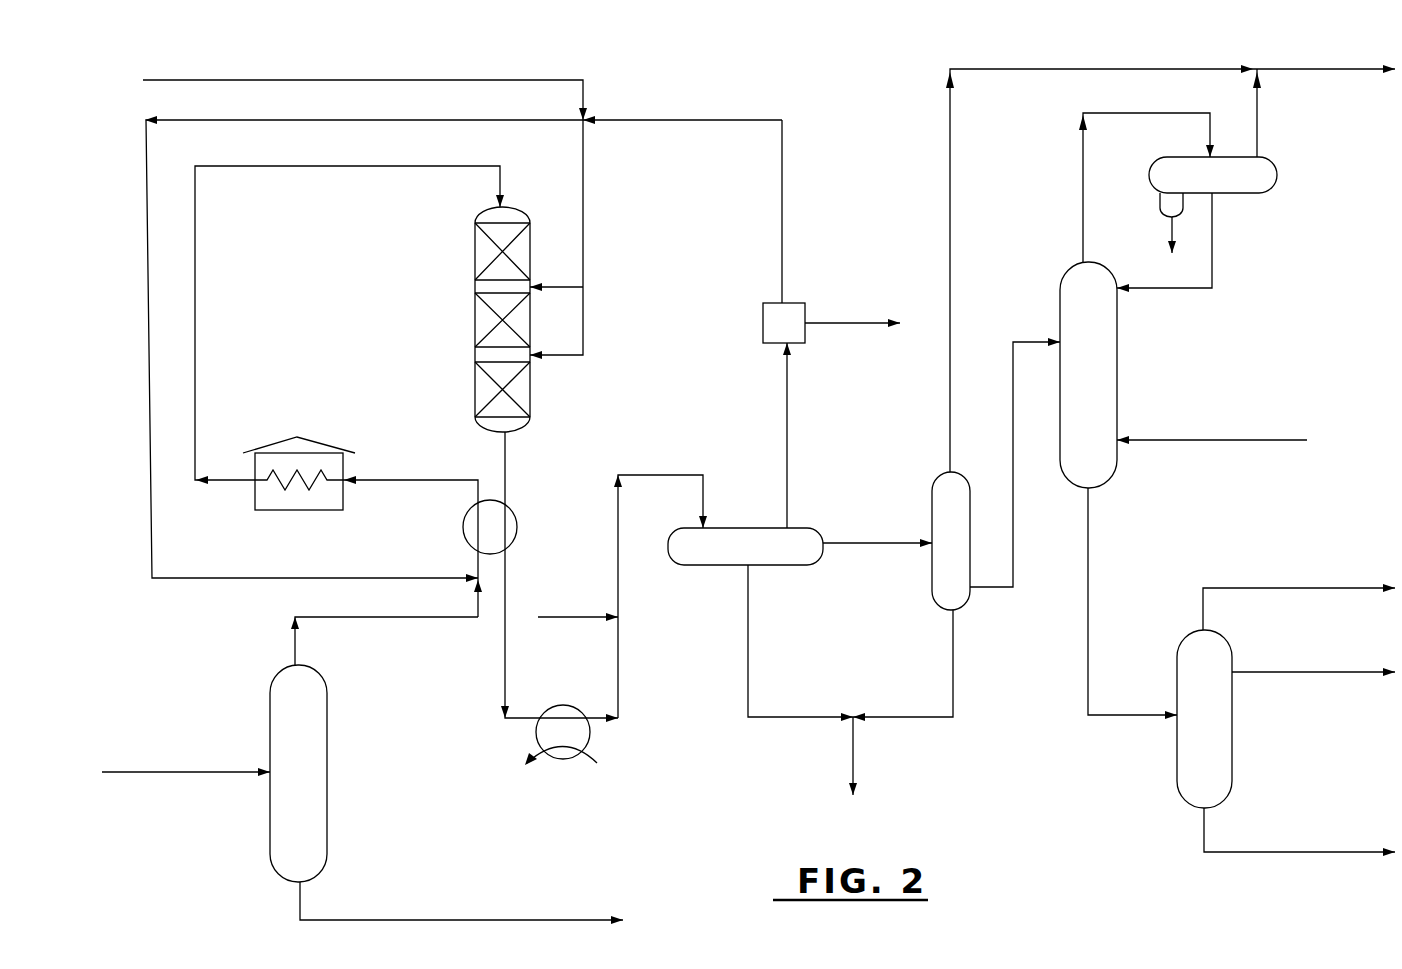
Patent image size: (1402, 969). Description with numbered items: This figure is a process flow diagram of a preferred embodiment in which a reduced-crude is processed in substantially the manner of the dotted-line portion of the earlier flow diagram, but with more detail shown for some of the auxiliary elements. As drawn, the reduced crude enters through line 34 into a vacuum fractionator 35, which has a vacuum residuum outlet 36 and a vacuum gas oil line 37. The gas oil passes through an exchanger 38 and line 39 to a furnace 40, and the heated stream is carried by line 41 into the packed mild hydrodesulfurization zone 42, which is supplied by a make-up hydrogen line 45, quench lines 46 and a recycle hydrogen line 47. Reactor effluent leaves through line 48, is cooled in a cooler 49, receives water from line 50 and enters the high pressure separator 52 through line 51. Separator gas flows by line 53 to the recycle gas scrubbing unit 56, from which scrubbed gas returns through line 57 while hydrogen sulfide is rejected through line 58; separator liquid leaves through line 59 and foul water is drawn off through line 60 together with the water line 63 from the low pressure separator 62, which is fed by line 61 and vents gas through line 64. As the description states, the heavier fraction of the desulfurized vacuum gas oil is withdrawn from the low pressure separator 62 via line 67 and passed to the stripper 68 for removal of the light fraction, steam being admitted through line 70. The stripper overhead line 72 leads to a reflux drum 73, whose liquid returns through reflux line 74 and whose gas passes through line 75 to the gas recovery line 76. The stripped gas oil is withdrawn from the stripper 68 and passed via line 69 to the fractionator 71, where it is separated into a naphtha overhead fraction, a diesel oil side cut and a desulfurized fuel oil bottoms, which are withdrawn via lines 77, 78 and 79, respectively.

The reduced crude feed line 34 is at (113, 772).
The vacuum fractionator 35 is at (327, 767).
The vacuum residuum line 36 is at (583, 913).
The vacuum gas oil line 37 is at (452, 618).
The heat exchanger 38 is at (515, 515).
The furnace feed line 39 is at (403, 475).
The furnace 40 is at (313, 440).
The heated feed line to reactor 41 is at (195, 370).
The mild hydrodesulfurization reactor 42 is at (475, 328).
The make-up hydrogen line 45 is at (583, 86).
The quench hydrogen line 46 is at (583, 213).
The recycle hydrogen line 47 is at (152, 360).
The reactor effluent line 48 is at (507, 678).
The cooler 49 is at (562, 760).
The wash water line 50 is at (575, 620).
The effluent line to high pressure separator 51 is at (660, 475).
The high pressure separator 52 is at (710, 565).
The separator gas line 53 is at (787, 447).
The recycle gas scrubbing zone 56 is at (777, 303).
The scrubbed recycle gas line 57 is at (785, 193).
The hydrogen sulfide line 58 is at (862, 317).
The separator liquid line 59 is at (748, 635).
The foul water line 60 is at (853, 745).
The liquid line to low pressure separator 61 is at (865, 542).
The low pressure separator 62 is at (932, 492).
The low pressure separator water line 63 is at (903, 717).
The low pressure separator gas line 64 is at (947, 135).
The line 67 is at (1013, 508).
The stripper 68 is at (1060, 300).
The line 69 is at (1088, 545).
The steam line 70 is at (1265, 438).
The fractionator 71 is at (1177, 672).
The stripper overhead line 72 is at (1083, 200).
The reflux drum 73 is at (1248, 193).
The reflux line 74 is at (1212, 247).
The reflux drum gas line 75 is at (1257, 115).
The gas recovery line 76 is at (1270, 70).
The line 77 is at (1342, 587).
The line 78 is at (1360, 672).
The line 79 is at (1373, 852).